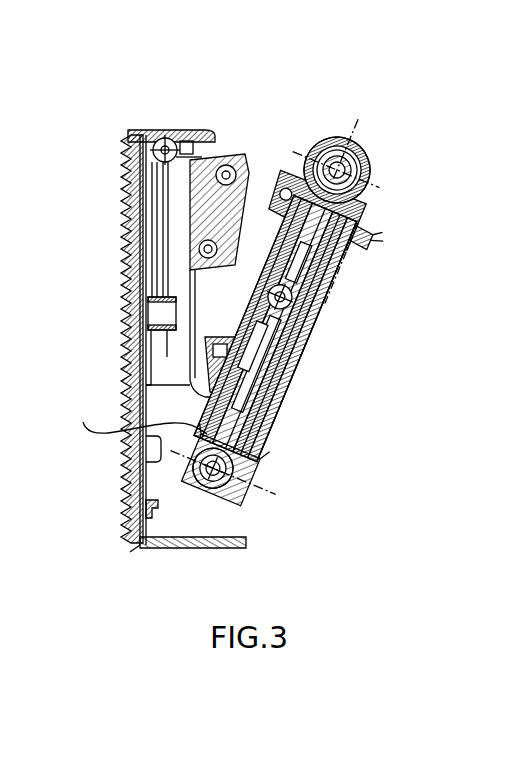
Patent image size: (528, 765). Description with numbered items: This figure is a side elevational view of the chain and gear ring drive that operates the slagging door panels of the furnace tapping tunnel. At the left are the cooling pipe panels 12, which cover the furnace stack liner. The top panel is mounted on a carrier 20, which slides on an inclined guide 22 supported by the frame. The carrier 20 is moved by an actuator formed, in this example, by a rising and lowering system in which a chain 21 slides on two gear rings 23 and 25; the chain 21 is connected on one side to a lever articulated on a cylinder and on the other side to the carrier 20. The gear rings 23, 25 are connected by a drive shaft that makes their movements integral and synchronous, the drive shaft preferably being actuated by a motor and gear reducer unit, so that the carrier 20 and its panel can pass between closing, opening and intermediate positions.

The cooling pipe panels 12 is at (124, 284).
The carrier 20 is at (262, 162).
The chain 21 is at (363, 199).
The inclined guide 22 is at (135, 414).
The gear ring 23 is at (384, 148).
The gear ring 25 is at (228, 505).